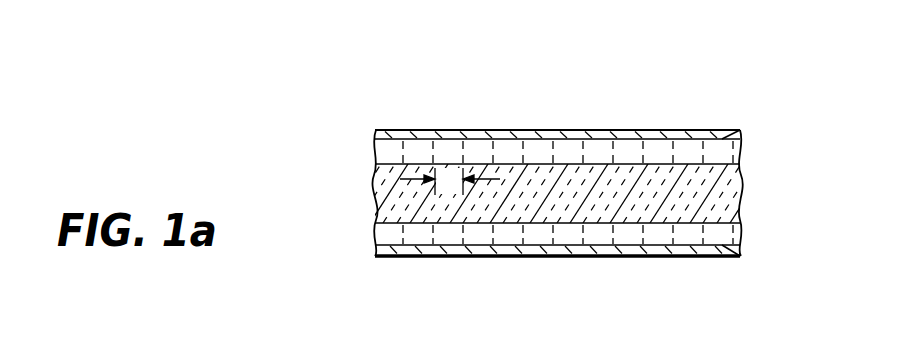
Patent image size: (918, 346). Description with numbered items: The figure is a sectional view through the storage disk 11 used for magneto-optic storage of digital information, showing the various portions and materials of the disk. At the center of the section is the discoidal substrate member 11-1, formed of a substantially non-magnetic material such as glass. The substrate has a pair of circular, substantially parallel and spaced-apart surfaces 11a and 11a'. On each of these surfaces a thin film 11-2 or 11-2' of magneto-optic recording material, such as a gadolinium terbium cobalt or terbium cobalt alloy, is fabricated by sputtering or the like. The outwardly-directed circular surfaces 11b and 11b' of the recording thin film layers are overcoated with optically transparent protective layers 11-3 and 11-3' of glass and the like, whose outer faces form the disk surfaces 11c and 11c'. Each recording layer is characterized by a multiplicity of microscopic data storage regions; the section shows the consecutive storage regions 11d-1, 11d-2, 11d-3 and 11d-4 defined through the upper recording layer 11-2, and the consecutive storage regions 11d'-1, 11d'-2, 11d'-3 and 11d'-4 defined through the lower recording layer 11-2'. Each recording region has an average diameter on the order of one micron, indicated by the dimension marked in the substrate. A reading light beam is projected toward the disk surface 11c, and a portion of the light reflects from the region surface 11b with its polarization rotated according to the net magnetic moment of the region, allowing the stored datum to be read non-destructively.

The storage disk 11 is at (368, 205).
The discoidal substrate member 11-1 is at (375, 186).
The thin film of magneto-optic recording material 11-2 is at (505, 147).
The thin film of magneto-optic recording material 11-2' is at (510, 253).
The protective layer 11-3 is at (541, 102).
The protective layer 11-3' is at (511, 279).
The substrate surface 11a is at (552, 117).
The substrate surface 11a' is at (571, 278).
The outwardly-directed circular surface 11b is at (745, 106).
The outwardly-directed circular surface 11b' is at (777, 258).
The disk surface 11c is at (718, 90).
The disk surface 11c' is at (725, 260).
The data storage region 11d-1 is at (455, 131).
The data storage region 11d-2 is at (508, 131).
The data storage region 11d-3 is at (572, 131).
The data storage region 11d-4 is at (633, 131).
The data storage region 11d'-1 is at (430, 278).
The data storage region 11d'-2 is at (515, 262).
The data storage region 11d'-3 is at (630, 262).
The data storage region 11d'-4 is at (683, 277).